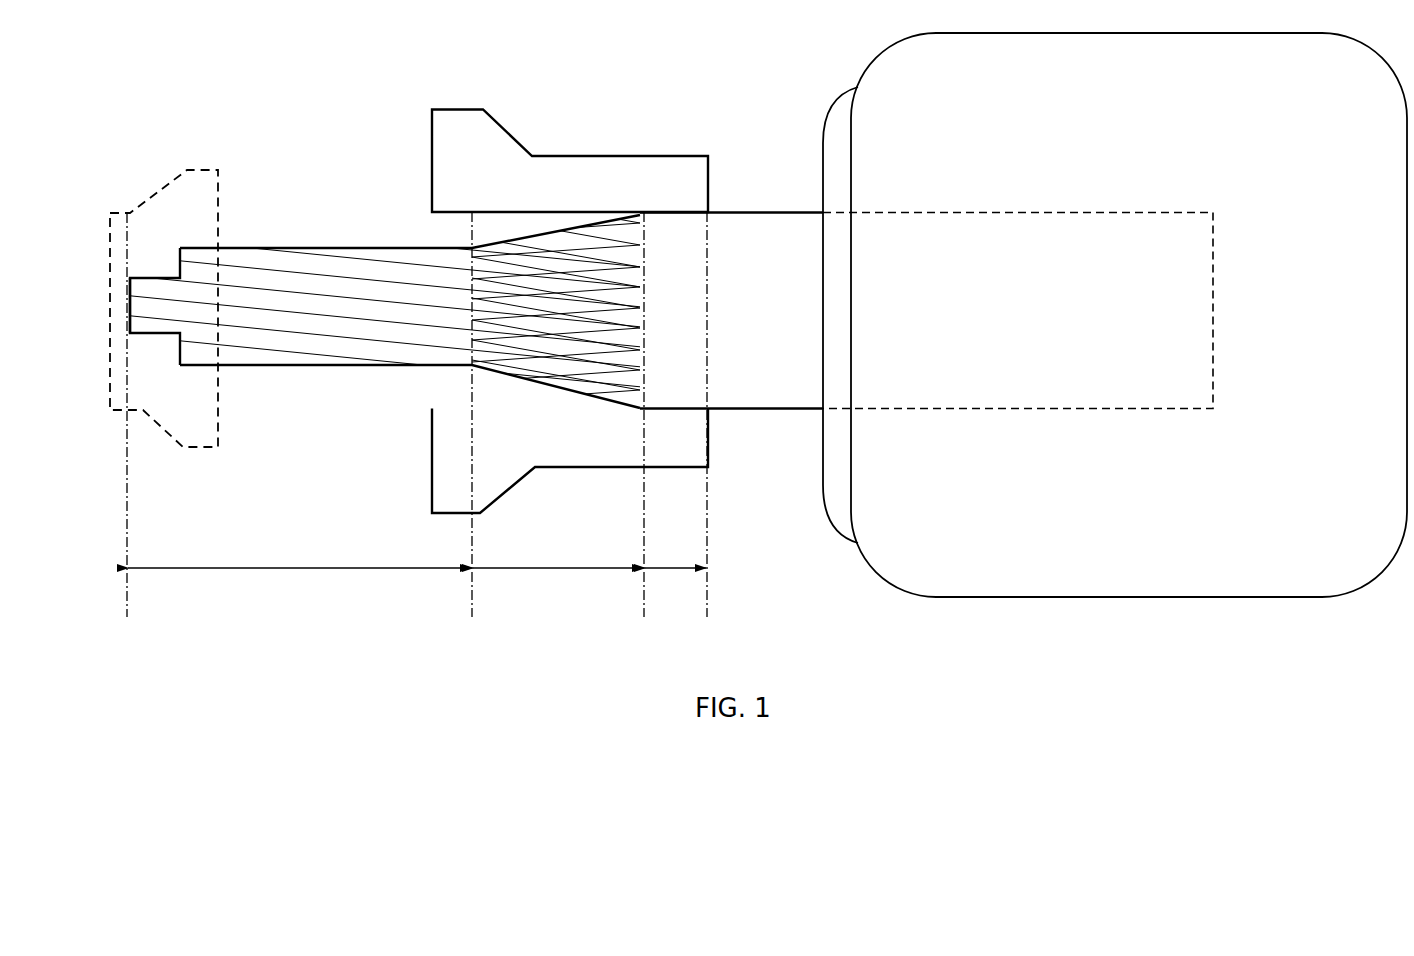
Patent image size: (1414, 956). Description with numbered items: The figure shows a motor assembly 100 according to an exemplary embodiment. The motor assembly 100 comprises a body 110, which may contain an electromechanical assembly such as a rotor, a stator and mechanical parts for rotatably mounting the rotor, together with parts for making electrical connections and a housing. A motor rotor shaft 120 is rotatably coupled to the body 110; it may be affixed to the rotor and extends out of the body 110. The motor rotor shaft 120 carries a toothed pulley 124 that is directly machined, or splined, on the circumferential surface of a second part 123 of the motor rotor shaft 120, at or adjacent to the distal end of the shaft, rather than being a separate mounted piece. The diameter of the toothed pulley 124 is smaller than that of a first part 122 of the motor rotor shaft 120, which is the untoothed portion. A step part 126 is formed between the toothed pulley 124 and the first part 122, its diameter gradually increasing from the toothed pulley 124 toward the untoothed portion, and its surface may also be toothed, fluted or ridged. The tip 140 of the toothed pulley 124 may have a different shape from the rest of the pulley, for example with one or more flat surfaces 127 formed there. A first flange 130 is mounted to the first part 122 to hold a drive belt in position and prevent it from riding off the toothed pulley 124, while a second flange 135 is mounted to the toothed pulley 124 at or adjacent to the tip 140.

The motor assembly 100 is at (80, 65).
The body 110 is at (1102, 568).
The motor rotor shaft 120 is at (792, 212).
The first part 122 is at (675, 414).
The second part 123 is at (299, 415).
The toothed pulley 124 is at (368, 247).
The step part 126 is at (557, 414).
The flat surfaces 127 is at (155, 277).
The first flange 130 is at (430, 122).
The second flange 135 is at (212, 167).
The tip 140 is at (119, 303).